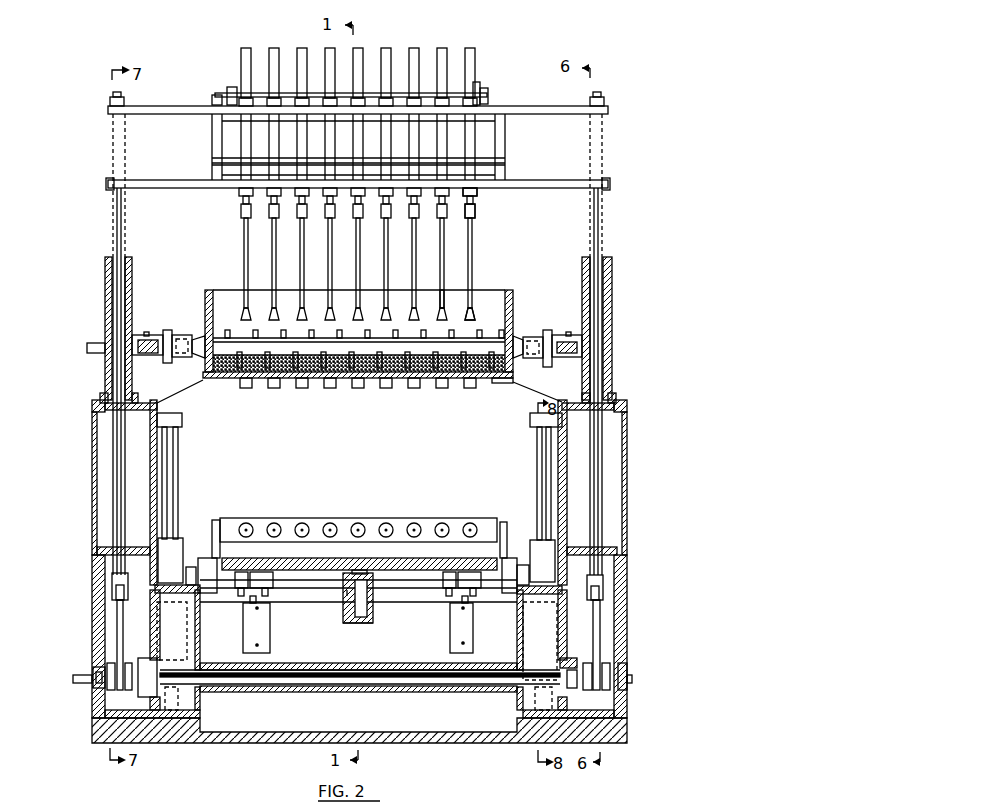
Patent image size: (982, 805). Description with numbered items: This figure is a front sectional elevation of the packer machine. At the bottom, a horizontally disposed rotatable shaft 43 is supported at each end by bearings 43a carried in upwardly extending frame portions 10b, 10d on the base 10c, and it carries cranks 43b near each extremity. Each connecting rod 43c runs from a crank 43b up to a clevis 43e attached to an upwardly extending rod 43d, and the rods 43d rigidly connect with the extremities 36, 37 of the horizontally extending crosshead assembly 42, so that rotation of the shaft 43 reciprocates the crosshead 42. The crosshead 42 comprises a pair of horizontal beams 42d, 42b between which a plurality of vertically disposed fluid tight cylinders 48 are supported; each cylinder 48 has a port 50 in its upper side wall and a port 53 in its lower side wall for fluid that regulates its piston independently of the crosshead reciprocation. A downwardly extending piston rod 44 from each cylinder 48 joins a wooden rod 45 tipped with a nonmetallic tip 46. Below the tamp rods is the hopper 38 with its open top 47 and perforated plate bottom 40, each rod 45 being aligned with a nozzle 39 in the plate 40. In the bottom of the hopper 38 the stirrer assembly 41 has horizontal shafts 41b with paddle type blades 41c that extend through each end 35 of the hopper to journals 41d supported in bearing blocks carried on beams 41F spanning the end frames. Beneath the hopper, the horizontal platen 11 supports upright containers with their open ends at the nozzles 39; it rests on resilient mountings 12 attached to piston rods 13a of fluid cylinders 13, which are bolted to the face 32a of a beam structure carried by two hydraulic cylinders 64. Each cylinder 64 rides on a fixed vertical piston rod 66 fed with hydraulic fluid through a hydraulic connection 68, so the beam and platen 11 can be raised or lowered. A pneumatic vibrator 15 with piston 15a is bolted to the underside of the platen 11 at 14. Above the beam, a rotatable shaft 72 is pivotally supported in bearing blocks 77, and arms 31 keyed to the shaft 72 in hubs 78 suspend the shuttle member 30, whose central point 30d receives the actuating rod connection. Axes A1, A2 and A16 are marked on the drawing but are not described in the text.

The crosshead extremity 36 is at (111, 109).
The crosshead extremity 37 is at (109, 184).
The crosshead assembly 42 is at (606, 158).
The upper beam 42d is at (551, 113).
The horizontal beam 42b is at (559, 182).
The fluid tight cylinder 48 is at (476, 148).
The port 50 is at (226, 124).
The port 53 is at (226, 163).
The wooden rod 45 is at (474, 243).
The piston rod 44 is at (478, 208).
The open top 47 is at (461, 298).
The nonmetallic tip 46 is at (472, 314).
The hopper 38 is at (478, 289).
The hopper end 35 is at (207, 291).
The stirrer assembly 41 is at (238, 339).
The journal 41d is at (205, 312).
The paddle type blade 41c is at (138, 333).
The horizontal shaft 41b is at (516, 334).
The beam 41F is at (172, 381).
The perforated plate bottom 40 is at (508, 380).
The nozzle 39 is at (437, 383).
The upwardly extending rod 43d is at (115, 212).
The clevis 43e is at (113, 595).
The connecting rod 43c is at (117, 632).
The crank 43b is at (110, 663).
The bearing 43a is at (93, 683).
The rotatable shaft 43 is at (84, 675).
The frame portion 10b is at (96, 403).
The right frame wall 10d is at (620, 407).
The base 10c is at (628, 723).
The hydraulic connection 68 is at (183, 420).
The fixed vertical piston rod 66 is at (178, 480).
The hydraulic cylinder 64 is at (176, 538).
The hub 78 is at (208, 563).
The bearing block 77 is at (187, 578).
The arm 31 is at (214, 517).
The shuttle member 30 is at (470, 518).
The central point 30d is at (442, 524).
The platen 11 is at (424, 562).
The vibrator mounting 14 is at (358, 588).
The resilient mounting 12 is at (273, 580).
The fluid cylinder 13 is at (242, 628).
The piston rod 13a is at (252, 600).
The rotatable shaft 72 is at (257, 608).
The axis A1 is at (257, 645).
The axis A2 is at (463, 608).
The axis A16 is at (349, 595).
The pneumatic vibrator 15 is at (373, 597).
The piston 15a is at (370, 636).
The beam face 32a is at (350, 650).